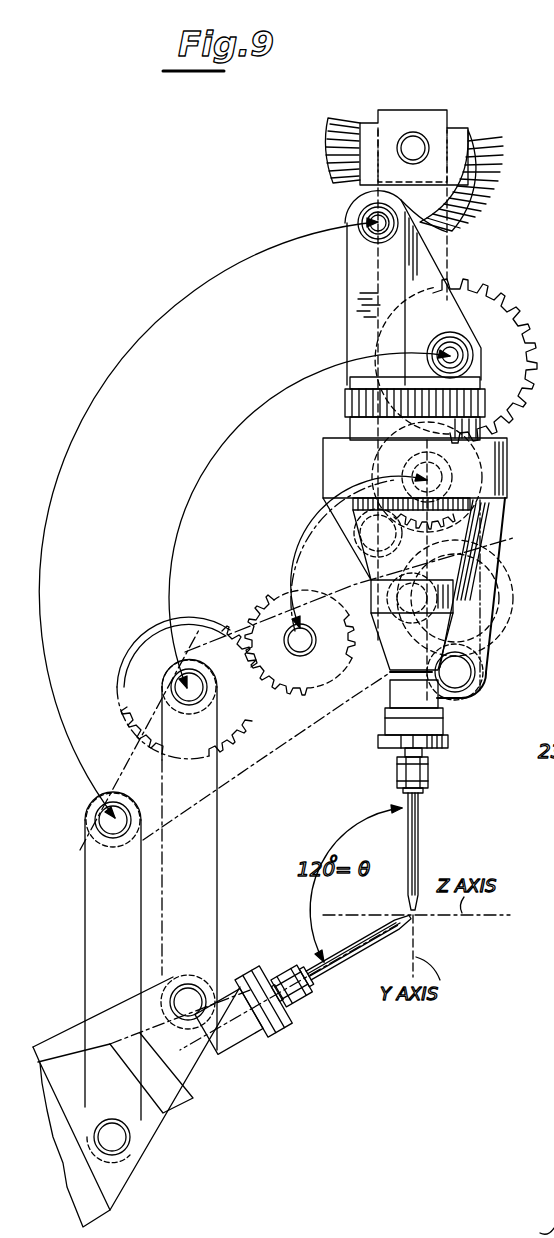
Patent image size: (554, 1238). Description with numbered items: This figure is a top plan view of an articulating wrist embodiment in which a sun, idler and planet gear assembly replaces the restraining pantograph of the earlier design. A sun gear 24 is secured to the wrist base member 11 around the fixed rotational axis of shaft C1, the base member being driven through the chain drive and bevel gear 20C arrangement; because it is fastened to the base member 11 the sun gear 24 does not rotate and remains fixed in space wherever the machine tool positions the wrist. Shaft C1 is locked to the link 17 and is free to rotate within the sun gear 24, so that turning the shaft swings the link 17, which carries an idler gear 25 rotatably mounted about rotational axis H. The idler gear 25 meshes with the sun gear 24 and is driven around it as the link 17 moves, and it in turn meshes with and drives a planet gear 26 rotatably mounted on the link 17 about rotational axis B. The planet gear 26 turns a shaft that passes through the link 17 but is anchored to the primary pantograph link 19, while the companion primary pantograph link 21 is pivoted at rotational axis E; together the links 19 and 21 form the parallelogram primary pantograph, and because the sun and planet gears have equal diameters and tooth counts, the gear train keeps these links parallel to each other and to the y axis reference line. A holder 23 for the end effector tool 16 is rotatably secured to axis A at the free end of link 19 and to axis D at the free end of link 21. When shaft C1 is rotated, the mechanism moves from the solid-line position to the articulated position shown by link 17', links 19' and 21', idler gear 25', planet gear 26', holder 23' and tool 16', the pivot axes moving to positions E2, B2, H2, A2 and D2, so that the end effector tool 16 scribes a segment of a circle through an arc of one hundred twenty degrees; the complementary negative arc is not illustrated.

The wrist base member 11 is at (438, 112).
The bevel gear 20C is at (483, 137).
The link 17 is at (421, 285).
The primary pantograph link 21 is at (354, 294).
The planet gear 26 is at (456, 356).
The idler gear 25 is at (433, 437).
The holder 23 is at (450, 512).
The primary pantograph link 19 is at (436, 598).
The sun gear 24 is at (485, 563).
The end effector tool 16 is at (431, 745).
The link (articulated position) 17' is at (296, 694).
The primary pantograph link (articulated position) 21' is at (89, 970).
The planet gear (articulated position) 26' is at (187, 659).
The idler gear (articulated position) 25' is at (299, 627).
The primary pantograph link (articulated position) 19' is at (216, 868).
The end effector tool (articulated position) 16' is at (268, 991).
The holder (articulated position) 23' is at (136, 1102).
The rotational axis E is at (362, 213).
The rotational axis B is at (468, 337).
The rotational axis H is at (438, 455).
The axis D is at (361, 533).
The axis A is at (458, 670).
The rotatable shaft C1 is at (412, 642).
The rotational axis E (articulated position) E2 is at (113, 781).
The rotational axis B (articulated position) B2 is at (195, 706).
The rotational axis H (articulated position) H2 is at (299, 650).
The axis A (articulated position) A2 is at (180, 974).
The axis D (articulated position) D2 is at (110, 1122).